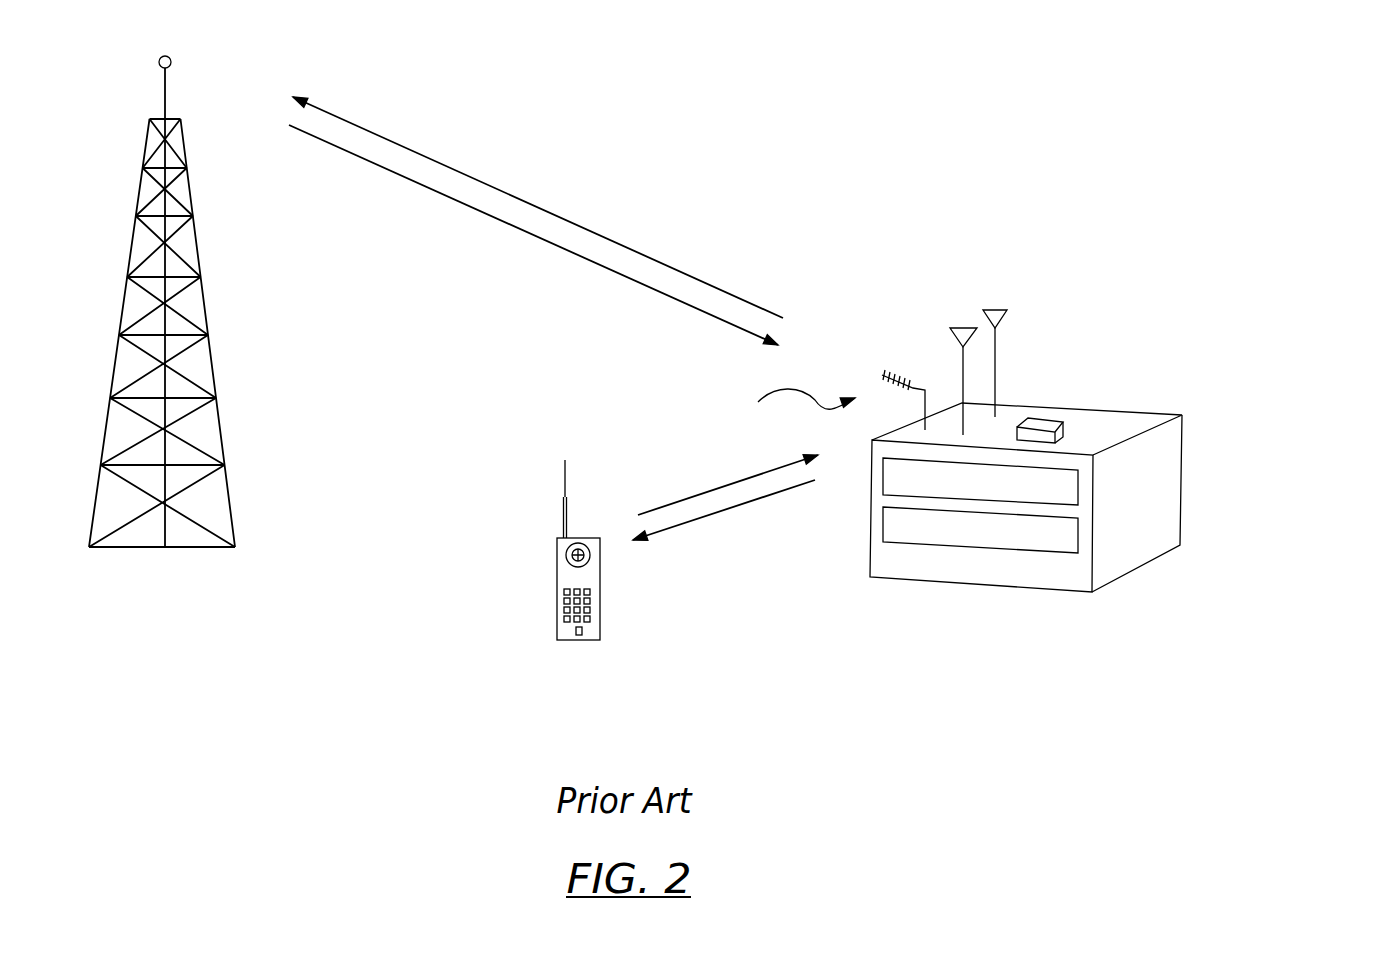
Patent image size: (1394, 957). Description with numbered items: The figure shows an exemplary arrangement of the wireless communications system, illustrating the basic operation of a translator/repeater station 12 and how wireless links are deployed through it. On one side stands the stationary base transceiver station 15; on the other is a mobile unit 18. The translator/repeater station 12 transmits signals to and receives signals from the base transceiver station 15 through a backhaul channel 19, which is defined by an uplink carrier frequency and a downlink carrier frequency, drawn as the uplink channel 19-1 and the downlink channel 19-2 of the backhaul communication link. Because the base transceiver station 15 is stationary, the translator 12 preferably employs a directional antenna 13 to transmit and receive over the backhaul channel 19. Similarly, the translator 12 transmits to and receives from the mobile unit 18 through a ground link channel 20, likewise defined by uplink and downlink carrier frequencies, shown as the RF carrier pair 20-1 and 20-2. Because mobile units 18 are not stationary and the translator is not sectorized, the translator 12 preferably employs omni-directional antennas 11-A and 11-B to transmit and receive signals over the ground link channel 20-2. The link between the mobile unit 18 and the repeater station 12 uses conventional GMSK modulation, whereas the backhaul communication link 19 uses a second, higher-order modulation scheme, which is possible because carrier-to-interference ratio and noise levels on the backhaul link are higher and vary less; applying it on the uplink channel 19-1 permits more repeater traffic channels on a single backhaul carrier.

The base transceiver station 15 is at (217, 370).
The backhaul channel 19 is at (539, 216).
The uplink channel of the backhaul communication link 19-1 is at (673, 270).
The downlink channel of the backhaul communication link 19-2 is at (667, 295).
The translator/repeater station 12 is at (1126, 427).
The omni-directional antenna 11-A is at (951, 329).
The omni-directional antenna 11-B is at (1008, 316).
The directional antenna 13 is at (790, 403).
The mobile unit 18 is at (557, 592).
The ground link channel 20 is at (720, 530).
The carrier of the ground link channel 20-1 is at (710, 488).
The ground link channel carrier 20-2 is at (708, 515).